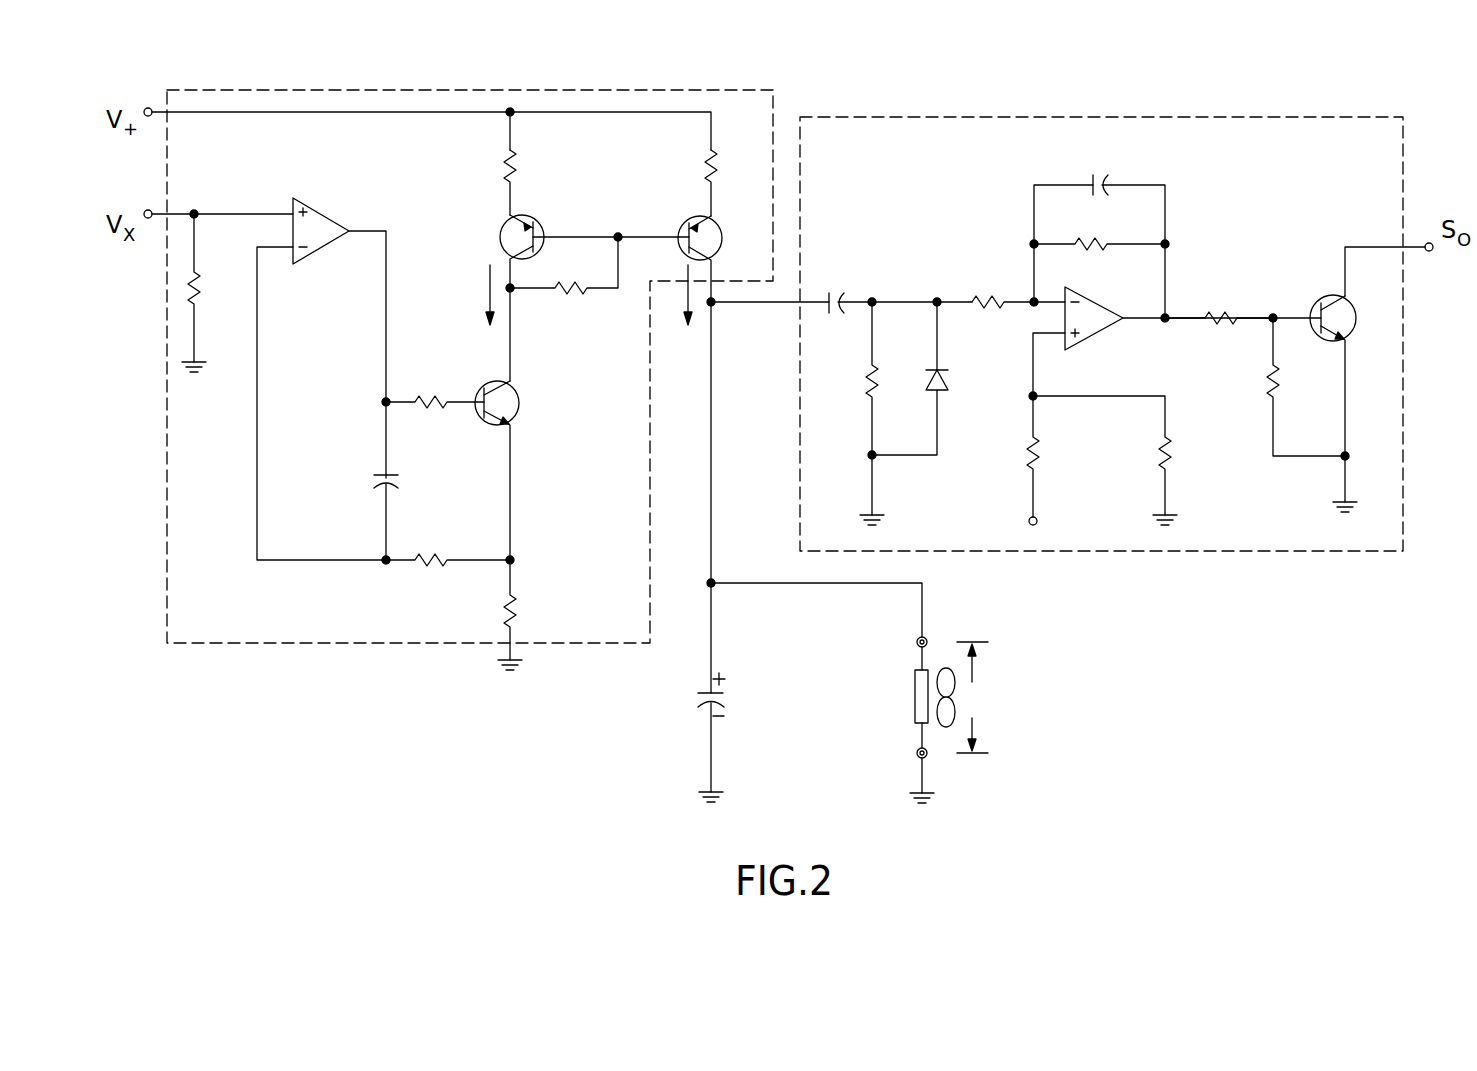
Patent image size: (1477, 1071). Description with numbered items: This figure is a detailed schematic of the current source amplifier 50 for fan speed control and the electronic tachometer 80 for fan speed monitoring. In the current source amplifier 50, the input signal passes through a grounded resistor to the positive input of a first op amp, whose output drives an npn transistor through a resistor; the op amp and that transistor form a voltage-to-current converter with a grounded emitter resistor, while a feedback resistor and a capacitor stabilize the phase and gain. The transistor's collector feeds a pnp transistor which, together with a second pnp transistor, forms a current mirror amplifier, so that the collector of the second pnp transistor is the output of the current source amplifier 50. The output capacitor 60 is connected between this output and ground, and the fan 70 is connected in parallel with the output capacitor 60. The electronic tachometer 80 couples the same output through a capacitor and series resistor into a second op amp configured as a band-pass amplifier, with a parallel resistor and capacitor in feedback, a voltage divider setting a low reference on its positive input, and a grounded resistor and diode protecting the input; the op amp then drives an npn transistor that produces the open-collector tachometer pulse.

The current source amplifier 50 is at (498, 90).
The output capacitor 60 is at (697, 698).
The fan 70 is at (890, 738).
The electronic tachometer 80 is at (1098, 117).